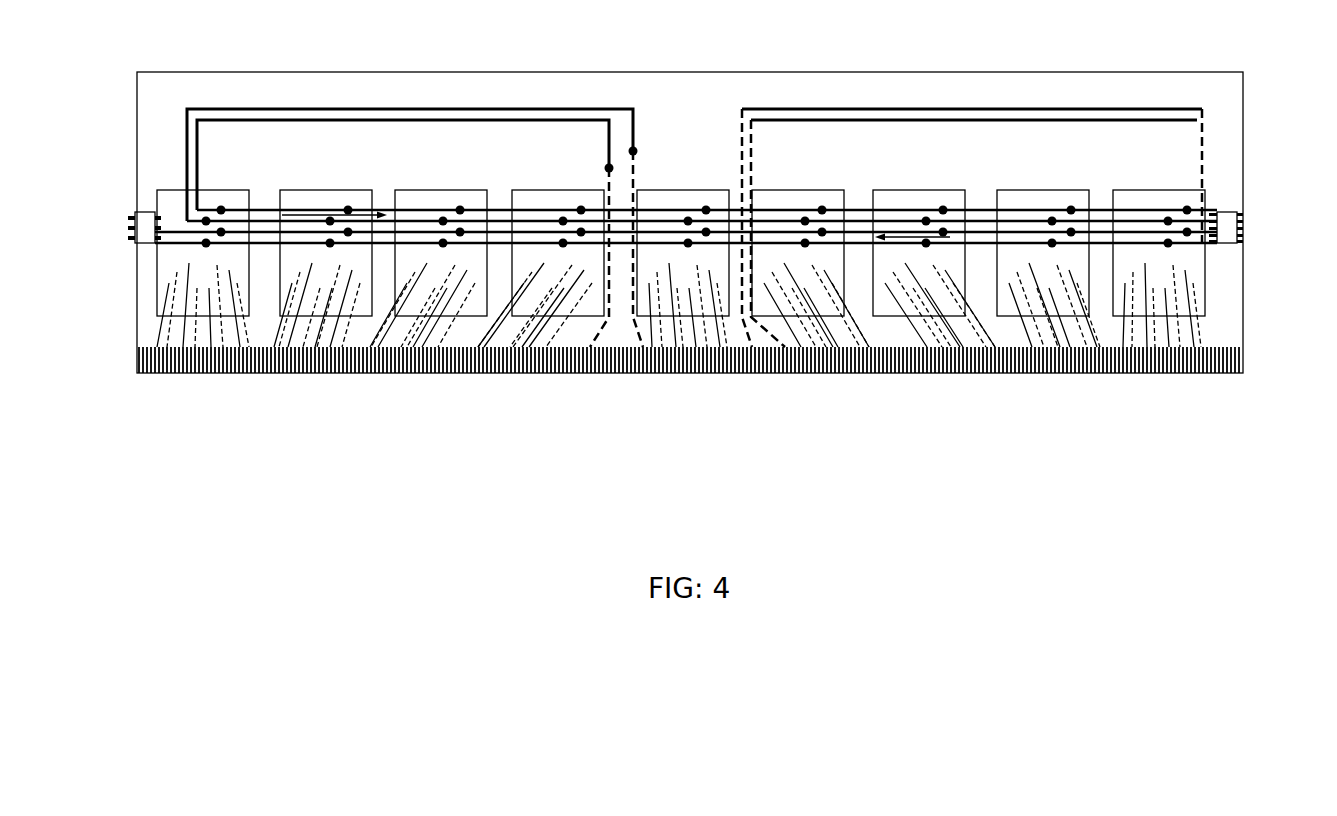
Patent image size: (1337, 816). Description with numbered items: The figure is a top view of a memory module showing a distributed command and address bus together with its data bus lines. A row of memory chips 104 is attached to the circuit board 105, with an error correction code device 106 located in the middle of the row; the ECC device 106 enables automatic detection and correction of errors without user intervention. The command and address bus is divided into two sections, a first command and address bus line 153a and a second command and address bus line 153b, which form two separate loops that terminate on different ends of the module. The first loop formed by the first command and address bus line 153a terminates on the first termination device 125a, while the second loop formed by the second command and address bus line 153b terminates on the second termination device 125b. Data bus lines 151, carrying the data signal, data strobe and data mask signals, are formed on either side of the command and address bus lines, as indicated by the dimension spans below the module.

The memory chip 104 is at (1151, 214).
The circuit board 105 is at (1184, 149).
The error correction code (ECC) device 106 is at (698, 182).
The first termination device 125a is at (1237, 224).
The second termination device 125b is at (135, 228).
The data bus lines 151 is at (1207, 405).
The first command and address bus line 153a is at (305, 108).
The second command and address bus line 153b is at (943, 115).